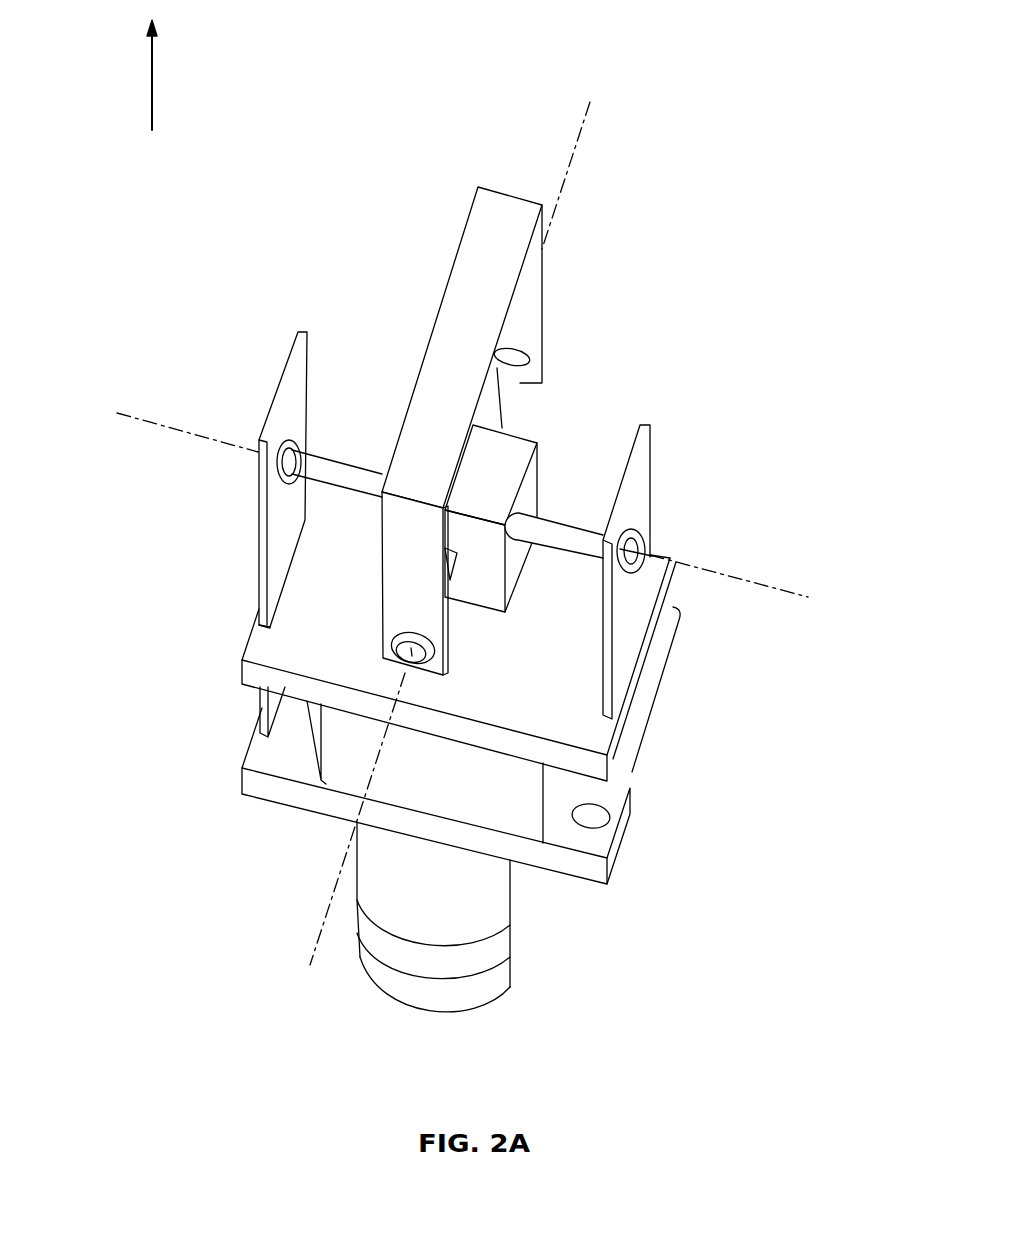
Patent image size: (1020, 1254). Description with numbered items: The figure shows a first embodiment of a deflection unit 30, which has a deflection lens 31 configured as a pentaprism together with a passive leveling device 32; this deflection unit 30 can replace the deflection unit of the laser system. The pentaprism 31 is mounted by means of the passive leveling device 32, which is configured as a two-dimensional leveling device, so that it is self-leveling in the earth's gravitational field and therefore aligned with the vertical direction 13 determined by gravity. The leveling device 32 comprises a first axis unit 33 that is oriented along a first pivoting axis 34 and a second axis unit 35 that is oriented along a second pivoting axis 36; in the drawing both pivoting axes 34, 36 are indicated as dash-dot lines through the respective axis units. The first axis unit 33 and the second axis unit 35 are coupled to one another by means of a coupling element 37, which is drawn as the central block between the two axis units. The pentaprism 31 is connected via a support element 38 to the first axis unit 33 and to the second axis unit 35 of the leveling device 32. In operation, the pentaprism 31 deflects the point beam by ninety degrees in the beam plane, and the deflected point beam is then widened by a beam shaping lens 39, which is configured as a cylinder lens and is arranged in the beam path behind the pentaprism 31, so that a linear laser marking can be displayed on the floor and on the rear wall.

The vertical direction 13 is at (152, 78).
The deflection unit 30 is at (722, 205).
The deflection lens 31 is at (520, 800).
The passive leveling device 32 is at (352, 313).
The first axis unit 33 is at (340, 470).
The first pivoting axis 34 is at (127, 406).
The second axis unit 35 is at (493, 400).
The second pivoting axis 36 is at (578, 128).
The coupling element 37 is at (480, 580).
The support element 38 is at (287, 682).
The beam shaping lens 39 is at (637, 720).